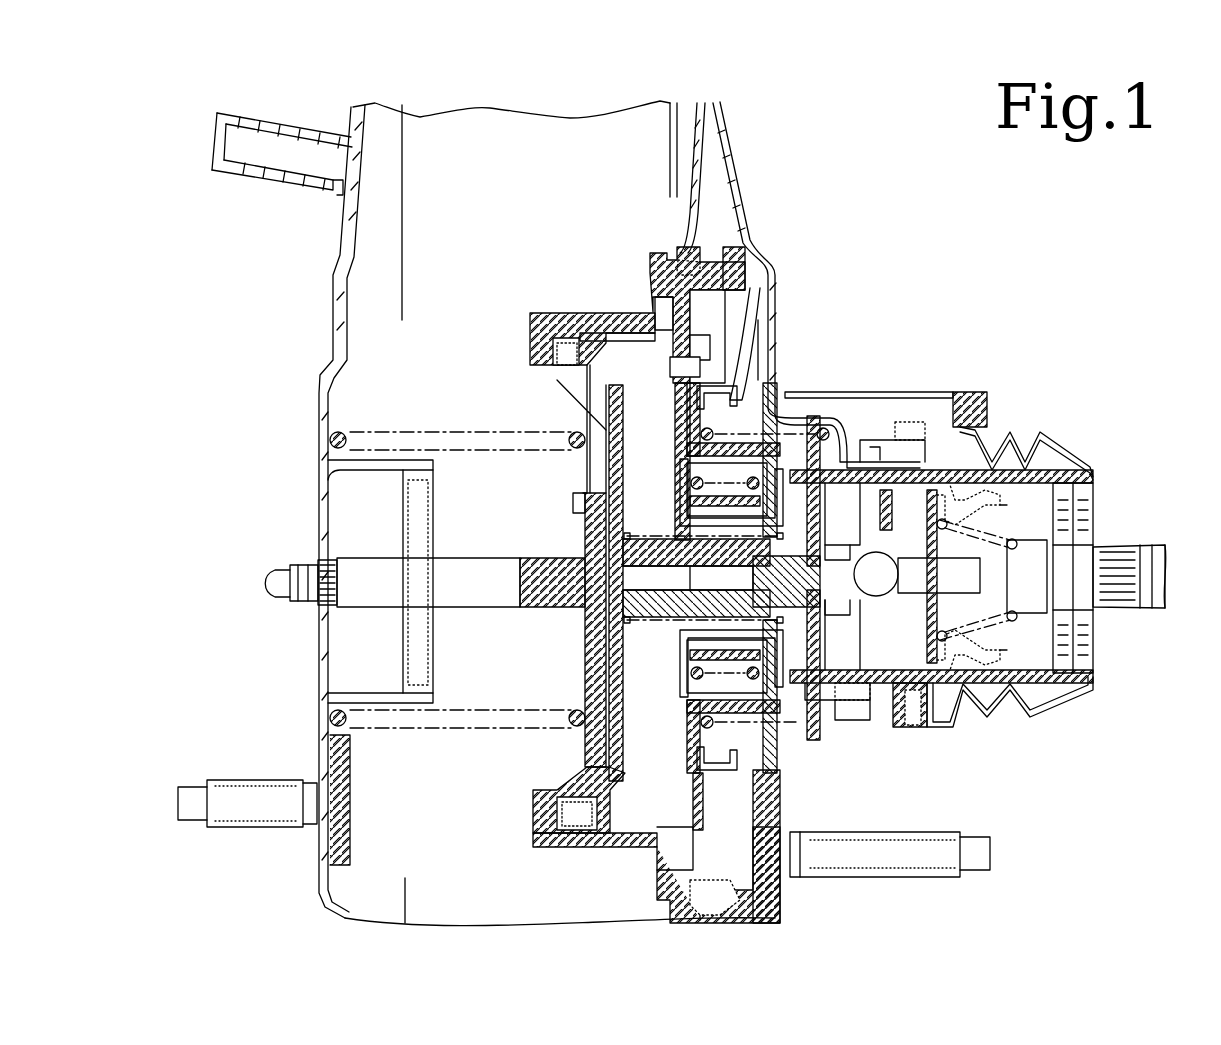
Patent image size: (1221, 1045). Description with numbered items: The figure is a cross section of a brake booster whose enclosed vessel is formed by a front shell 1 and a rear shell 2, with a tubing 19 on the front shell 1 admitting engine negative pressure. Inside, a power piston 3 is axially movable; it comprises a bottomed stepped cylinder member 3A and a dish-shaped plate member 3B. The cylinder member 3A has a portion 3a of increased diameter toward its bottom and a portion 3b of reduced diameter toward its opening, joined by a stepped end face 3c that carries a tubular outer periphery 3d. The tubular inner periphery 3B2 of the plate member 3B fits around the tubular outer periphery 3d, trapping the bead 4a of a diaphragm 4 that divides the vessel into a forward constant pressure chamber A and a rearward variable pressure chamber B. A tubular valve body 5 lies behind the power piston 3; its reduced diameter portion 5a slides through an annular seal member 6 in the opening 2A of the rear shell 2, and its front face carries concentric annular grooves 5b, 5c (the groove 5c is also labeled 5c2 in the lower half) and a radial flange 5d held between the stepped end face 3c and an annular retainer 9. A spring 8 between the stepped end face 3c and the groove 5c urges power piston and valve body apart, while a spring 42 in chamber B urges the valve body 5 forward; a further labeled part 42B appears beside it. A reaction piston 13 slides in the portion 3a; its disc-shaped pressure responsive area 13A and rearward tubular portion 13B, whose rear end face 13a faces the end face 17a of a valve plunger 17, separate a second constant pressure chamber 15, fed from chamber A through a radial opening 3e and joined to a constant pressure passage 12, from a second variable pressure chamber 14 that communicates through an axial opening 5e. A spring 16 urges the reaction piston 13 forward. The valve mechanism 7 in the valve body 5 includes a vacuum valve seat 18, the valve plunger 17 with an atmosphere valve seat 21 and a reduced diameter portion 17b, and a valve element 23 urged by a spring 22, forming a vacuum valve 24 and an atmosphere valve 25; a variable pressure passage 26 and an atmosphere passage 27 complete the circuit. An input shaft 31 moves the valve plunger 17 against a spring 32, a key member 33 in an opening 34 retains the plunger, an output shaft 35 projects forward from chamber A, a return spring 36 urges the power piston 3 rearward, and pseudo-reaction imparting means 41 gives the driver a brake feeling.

The front shell 1 is at (340, 241).
The tubing 19 is at (277, 190).
The stepped cylinder member 3A is at (533, 333).
The portion of increased diameter 3a is at (585, 322).
The pressure responsive area 13A is at (602, 450).
The return spring 36 is at (428, 432).
The second variable pressure chamber 14 is at (555, 750).
The power piston 3 is at (648, 258).
The radial opening 3e is at (665, 310).
The tubular outer periphery 3d is at (738, 282).
The bead 4a is at (708, 254).
The flange 5d is at (680, 400).
The annular retainer 9 is at (725, 385).
The plate member 3B is at (702, 163).
The tubular inner periphery 3B2 is at (683, 250).
The diaphragm 4 is at (718, 136).
The rear shell 2 is at (735, 185).
The variable pressure chamber B is at (720, 220).
The constant pressure chamber A is at (470, 185).
The spring 42 is at (762, 365).
The valve portion 42B is at (772, 405).
The constant pressure passage 12 is at (795, 420).
The annular seal member 6 is at (840, 435).
The valve body 5 is at (855, 392).
The vacuum valve seat 18 is at (892, 426).
The vacuum valve 24 is at (888, 480).
The axial opening 5e is at (912, 500).
The reduced diameter portion 5a is at (985, 455).
The valve mechanism 7 is at (998, 715).
The atmosphere valve seat 21 is at (1030, 510).
The atmosphere valve 25 is at (927, 625).
The spring 22 is at (1023, 577).
The spring 32 is at (1092, 490).
The input shaft 31 is at (1110, 565).
The valve plunger 17 is at (876, 574).
The portion of reduced diameter 17b is at (939, 576).
The valve element 23 is at (933, 680).
The opening 2A is at (888, 700).
The atmosphere passage 27 is at (1030, 662).
The reaction piston 13 is at (625, 725).
The rear end face 13a is at (690, 450).
The tubular portion 13B is at (672, 615).
The spring 16 is at (585, 528).
The spring 8 is at (700, 466).
The annular groove 5c is at (698, 496).
The passage 5c2 is at (700, 710).
The annular groove 5b is at (700, 542).
The end face 17a is at (702, 655).
The portion of reduced diameter 3b is at (738, 672).
The key member 33 is at (808, 742).
The opening 34 is at (838, 700).
The variable pressure passage 26 is at (858, 720).
The second constant pressure chamber 15 is at (648, 842).
The stepped end face 3c is at (703, 905).
The output shaft 35 is at (455, 578).
The pseudo-reaction imparting means 41 is at (540, 800).